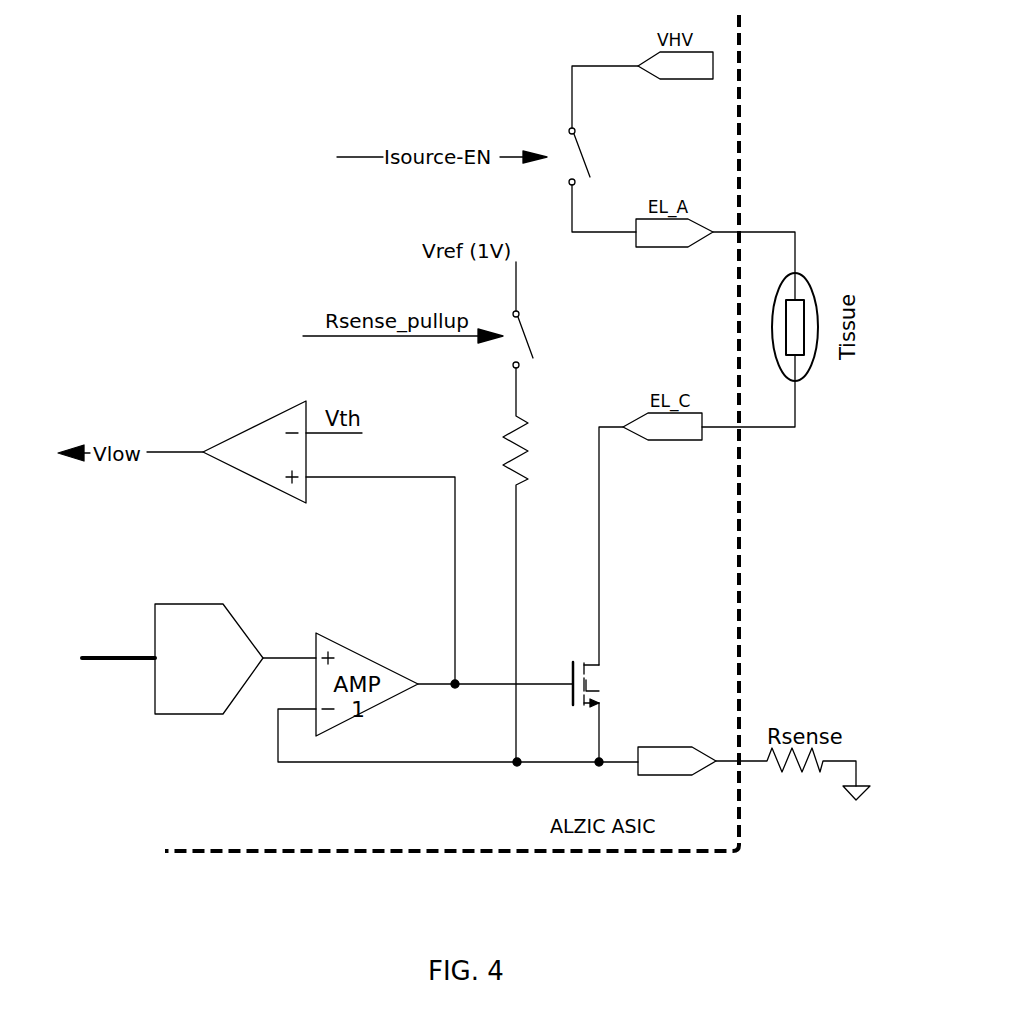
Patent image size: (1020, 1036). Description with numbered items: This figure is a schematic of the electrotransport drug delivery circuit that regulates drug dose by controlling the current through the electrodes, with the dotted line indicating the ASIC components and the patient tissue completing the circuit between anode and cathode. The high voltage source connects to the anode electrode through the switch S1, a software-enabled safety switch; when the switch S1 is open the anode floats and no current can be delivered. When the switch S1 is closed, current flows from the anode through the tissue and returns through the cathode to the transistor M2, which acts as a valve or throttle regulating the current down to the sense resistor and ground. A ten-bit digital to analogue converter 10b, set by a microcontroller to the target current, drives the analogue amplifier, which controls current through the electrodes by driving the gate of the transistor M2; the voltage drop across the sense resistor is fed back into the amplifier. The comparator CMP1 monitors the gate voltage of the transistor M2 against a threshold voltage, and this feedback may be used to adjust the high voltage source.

The switch S1 is at (599, 156).
The comparator CMP1 is at (254, 452).
The 10 bit DAC 10b is at (160, 659).
The switch (transistor) M2 is at (610, 684).